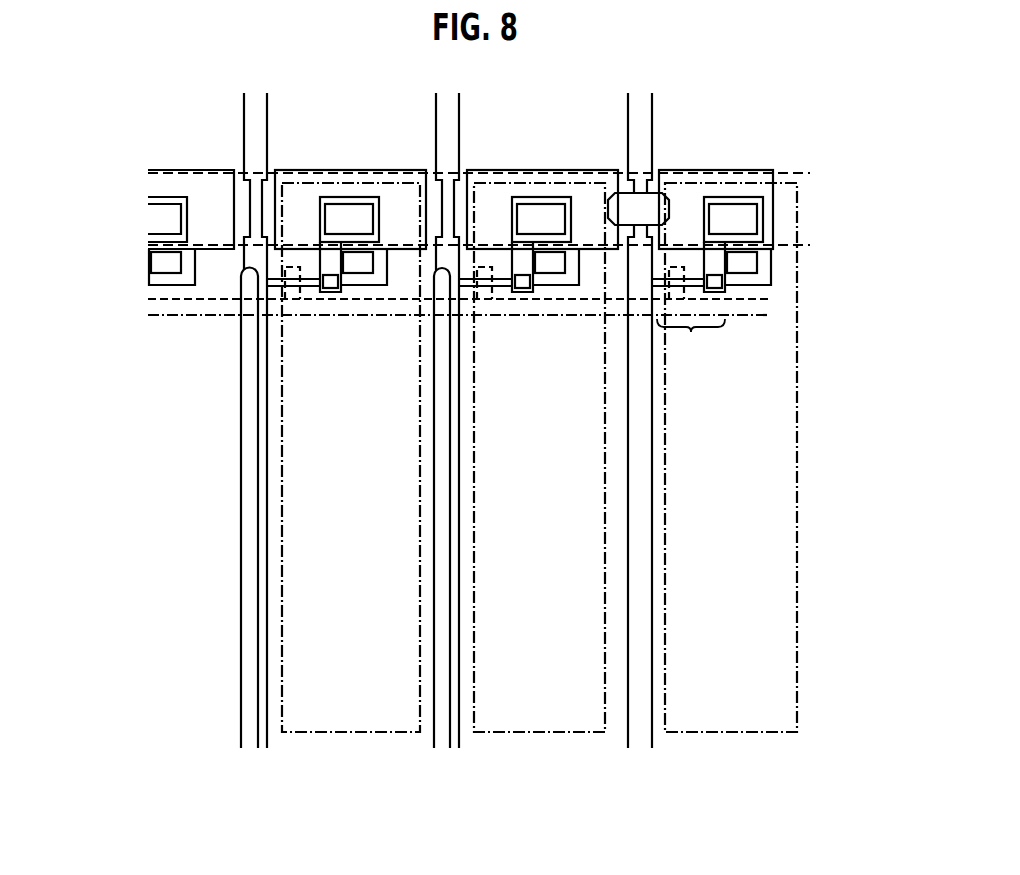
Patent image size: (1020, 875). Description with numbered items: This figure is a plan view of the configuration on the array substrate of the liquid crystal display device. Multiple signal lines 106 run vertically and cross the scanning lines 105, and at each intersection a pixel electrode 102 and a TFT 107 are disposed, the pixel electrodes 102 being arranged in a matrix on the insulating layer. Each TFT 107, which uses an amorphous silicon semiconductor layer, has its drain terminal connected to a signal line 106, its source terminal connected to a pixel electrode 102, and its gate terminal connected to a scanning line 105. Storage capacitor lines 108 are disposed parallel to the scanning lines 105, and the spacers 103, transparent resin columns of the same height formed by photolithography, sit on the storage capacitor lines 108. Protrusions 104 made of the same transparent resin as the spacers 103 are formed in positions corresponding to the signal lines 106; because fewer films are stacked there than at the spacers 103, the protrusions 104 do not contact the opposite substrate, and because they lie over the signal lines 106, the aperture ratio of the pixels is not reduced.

The pixel electrode 102 is at (797, 453).
The spacer 103 is at (656, 190).
The protrusion 104 is at (242, 458).
The scanning line 105 is at (765, 304).
The signal line 106 is at (647, 438).
The TFT 107 is at (691, 345).
The storage capacitor line 108 is at (782, 170).